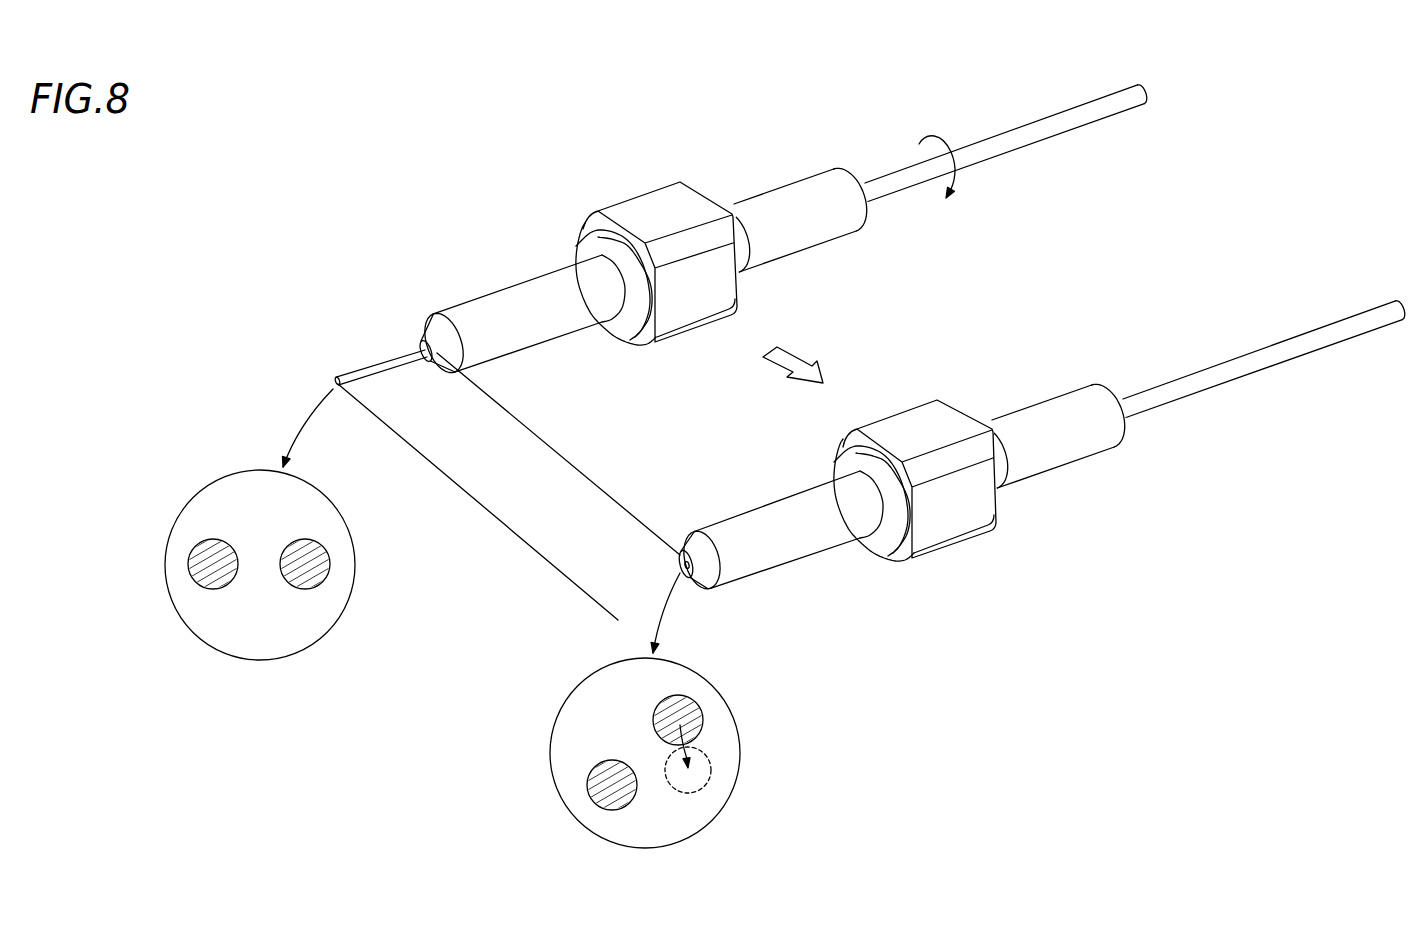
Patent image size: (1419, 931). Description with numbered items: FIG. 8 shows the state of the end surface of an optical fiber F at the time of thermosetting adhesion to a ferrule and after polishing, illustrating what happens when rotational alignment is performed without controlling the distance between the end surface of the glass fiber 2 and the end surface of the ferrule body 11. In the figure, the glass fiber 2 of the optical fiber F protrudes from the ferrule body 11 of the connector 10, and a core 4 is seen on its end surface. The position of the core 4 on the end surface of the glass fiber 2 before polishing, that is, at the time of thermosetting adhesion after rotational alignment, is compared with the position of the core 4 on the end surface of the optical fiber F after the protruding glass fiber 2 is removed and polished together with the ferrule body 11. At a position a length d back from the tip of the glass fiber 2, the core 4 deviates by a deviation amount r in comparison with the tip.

The glass fiber 2 is at (373, 362).
The core 4 is at (317, 567).
The optical connector 10 is at (912, 342).
The ferrule body 11 is at (510, 300).
The optical fiber F is at (1028, 132).
The length d is at (612, 507).
The deviation amount r is at (697, 747).